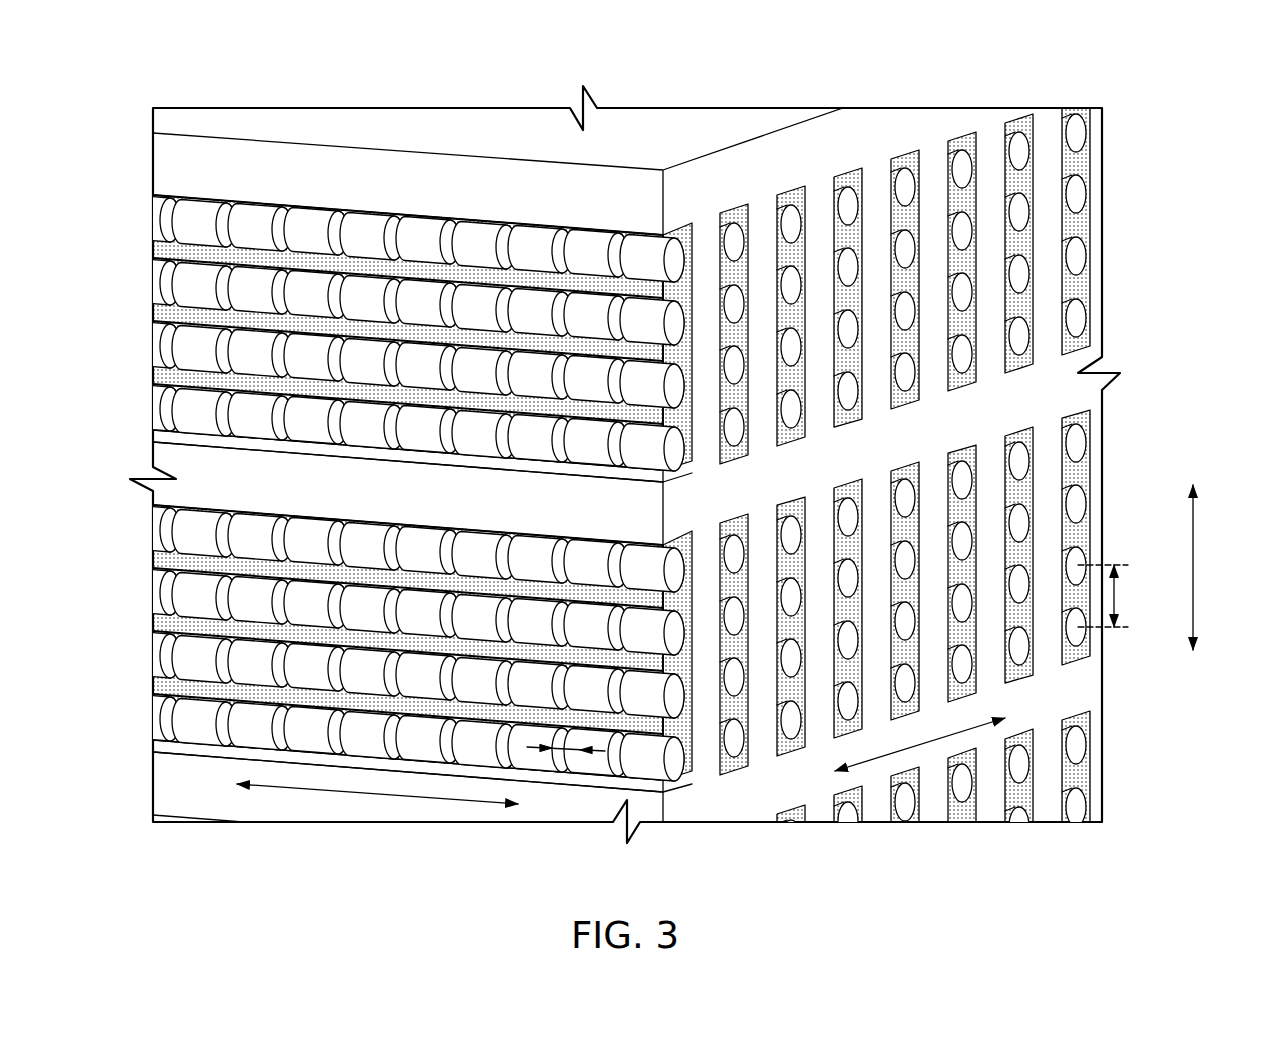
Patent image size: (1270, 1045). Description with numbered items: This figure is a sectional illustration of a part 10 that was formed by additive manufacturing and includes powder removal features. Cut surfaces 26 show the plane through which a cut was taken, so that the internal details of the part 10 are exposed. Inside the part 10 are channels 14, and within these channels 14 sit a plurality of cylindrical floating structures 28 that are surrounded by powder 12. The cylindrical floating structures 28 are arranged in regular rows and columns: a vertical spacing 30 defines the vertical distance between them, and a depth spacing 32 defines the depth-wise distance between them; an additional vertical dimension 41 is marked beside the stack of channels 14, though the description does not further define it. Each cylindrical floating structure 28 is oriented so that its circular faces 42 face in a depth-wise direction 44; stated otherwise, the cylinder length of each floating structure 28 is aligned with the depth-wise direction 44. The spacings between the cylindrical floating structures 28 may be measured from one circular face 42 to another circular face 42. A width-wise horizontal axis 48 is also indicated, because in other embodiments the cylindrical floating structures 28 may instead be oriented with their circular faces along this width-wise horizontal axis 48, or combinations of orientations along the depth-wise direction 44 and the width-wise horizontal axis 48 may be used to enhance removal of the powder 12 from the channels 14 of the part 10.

The part 10 is at (985, 82).
The powder 12 is at (160, 247).
The channels 14 is at (1020, 305).
The cut surfaces 26 is at (172, 454).
The cylindrical floating structures 28 is at (197, 716).
The vertical spacing 30 is at (1117, 593).
The depth spacing 32 is at (570, 752).
The height 41 is at (1197, 568).
The circular faces 42 is at (1078, 502).
The depth-wise direction 44 is at (378, 797).
The width-wise horizontal axis 48 is at (930, 742).